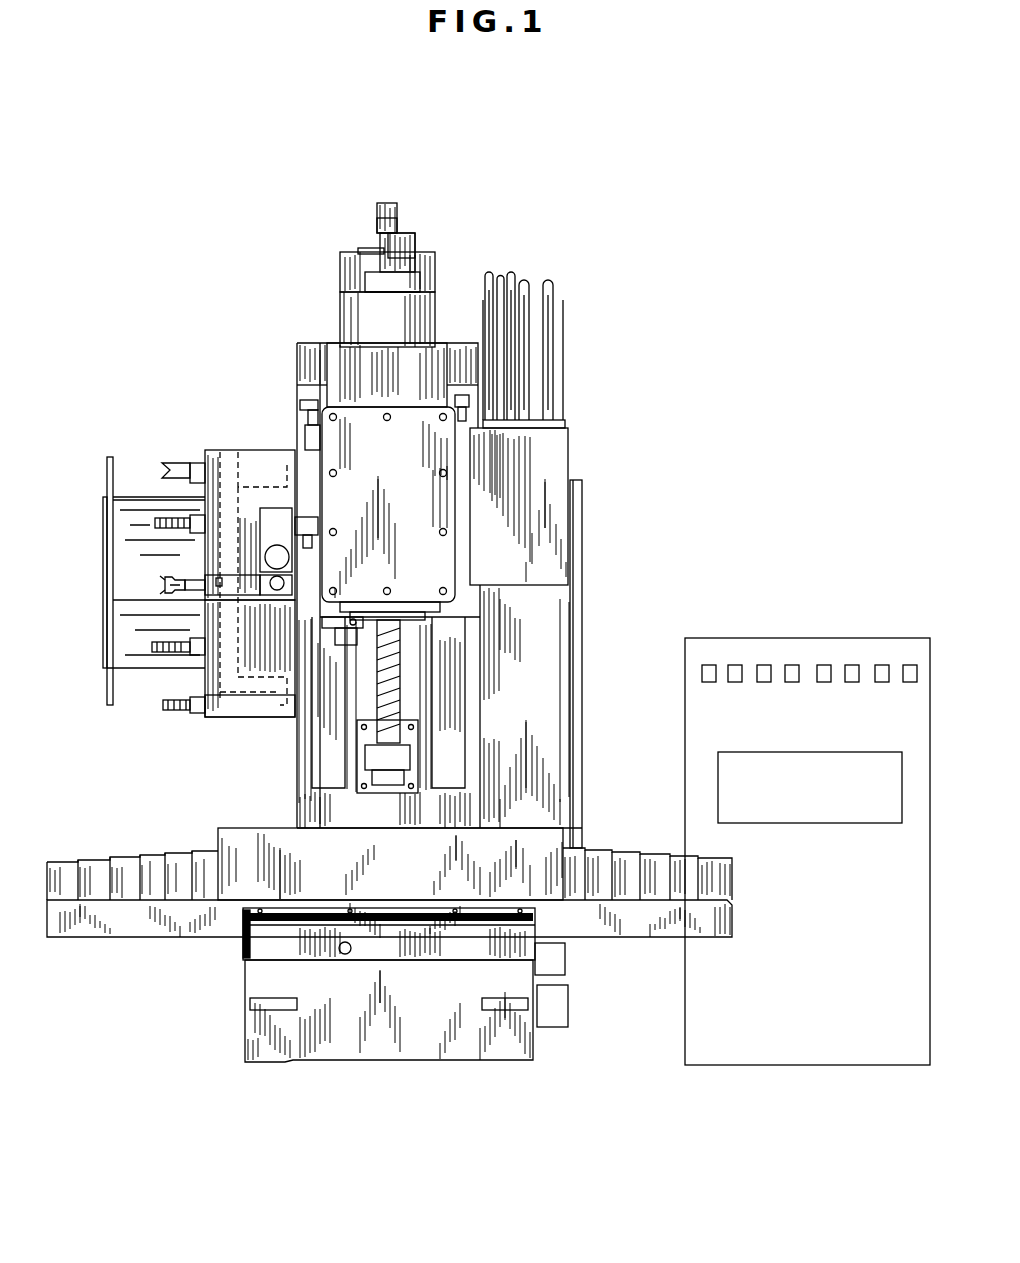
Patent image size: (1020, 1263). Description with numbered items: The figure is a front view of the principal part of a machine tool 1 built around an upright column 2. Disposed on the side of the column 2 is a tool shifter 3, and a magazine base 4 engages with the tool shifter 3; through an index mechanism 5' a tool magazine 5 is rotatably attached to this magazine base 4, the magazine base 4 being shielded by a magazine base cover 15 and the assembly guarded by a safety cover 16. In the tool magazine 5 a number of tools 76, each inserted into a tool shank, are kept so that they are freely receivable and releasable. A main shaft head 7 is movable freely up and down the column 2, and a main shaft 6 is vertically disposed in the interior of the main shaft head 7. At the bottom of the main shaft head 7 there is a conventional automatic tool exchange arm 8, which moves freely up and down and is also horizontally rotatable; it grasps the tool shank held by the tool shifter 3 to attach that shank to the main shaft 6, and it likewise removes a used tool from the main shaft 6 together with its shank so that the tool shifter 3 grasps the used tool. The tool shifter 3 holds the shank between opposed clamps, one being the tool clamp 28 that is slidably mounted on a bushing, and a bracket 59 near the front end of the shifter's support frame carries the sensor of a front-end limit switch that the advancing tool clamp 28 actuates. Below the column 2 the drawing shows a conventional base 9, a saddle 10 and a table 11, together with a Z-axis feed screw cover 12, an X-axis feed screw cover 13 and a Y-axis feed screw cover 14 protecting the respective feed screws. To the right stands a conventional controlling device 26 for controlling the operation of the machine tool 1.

The machine tool 1 is at (603, 277).
The column 2 is at (303, 392).
The tool shifter 3 is at (275, 520).
The magazine base 4 is at (245, 502).
The tool magazine 5 is at (122, 573).
The index mechanism 5' is at (234, 698).
The main shaft 6 is at (378, 613).
The main shaft head 7 is at (428, 500).
The automatic tool exchange arm 8 is at (335, 640).
The base 9 is at (312, 1038).
The saddle 10 is at (168, 920).
The table 11 is at (540, 848).
The Z-axis feed screw cover 12 is at (392, 668).
The X-axis feed screw cover 13 is at (150, 865).
The Y-axis feed screw cover 14 is at (243, 940).
The magazine base cover 15 is at (258, 706).
The safety cover 16 is at (105, 470).
The controlling device 26 is at (775, 637).
The tool clamp 28 is at (236, 580).
The bracket 59 is at (300, 522).
The tools 76 is at (160, 706).